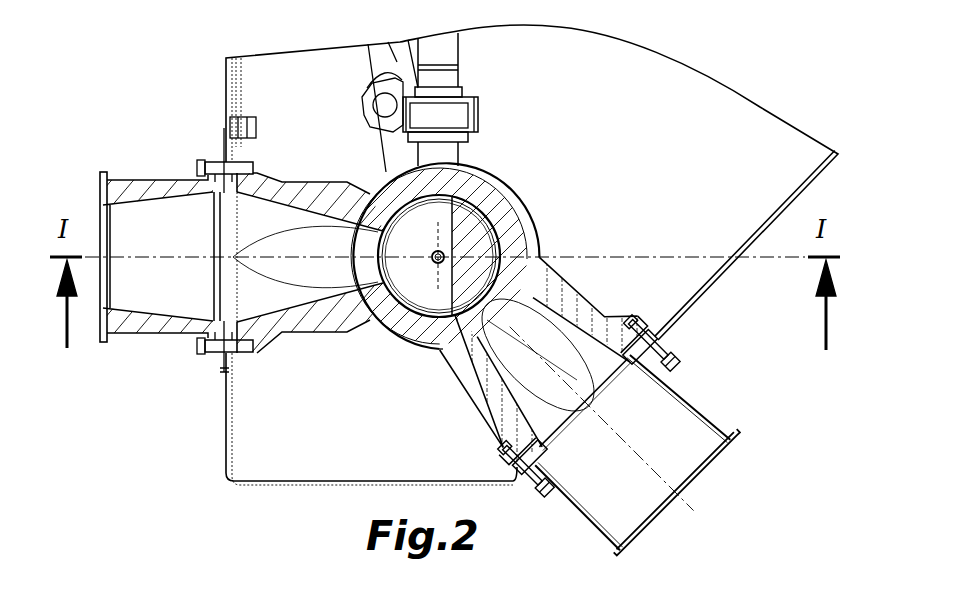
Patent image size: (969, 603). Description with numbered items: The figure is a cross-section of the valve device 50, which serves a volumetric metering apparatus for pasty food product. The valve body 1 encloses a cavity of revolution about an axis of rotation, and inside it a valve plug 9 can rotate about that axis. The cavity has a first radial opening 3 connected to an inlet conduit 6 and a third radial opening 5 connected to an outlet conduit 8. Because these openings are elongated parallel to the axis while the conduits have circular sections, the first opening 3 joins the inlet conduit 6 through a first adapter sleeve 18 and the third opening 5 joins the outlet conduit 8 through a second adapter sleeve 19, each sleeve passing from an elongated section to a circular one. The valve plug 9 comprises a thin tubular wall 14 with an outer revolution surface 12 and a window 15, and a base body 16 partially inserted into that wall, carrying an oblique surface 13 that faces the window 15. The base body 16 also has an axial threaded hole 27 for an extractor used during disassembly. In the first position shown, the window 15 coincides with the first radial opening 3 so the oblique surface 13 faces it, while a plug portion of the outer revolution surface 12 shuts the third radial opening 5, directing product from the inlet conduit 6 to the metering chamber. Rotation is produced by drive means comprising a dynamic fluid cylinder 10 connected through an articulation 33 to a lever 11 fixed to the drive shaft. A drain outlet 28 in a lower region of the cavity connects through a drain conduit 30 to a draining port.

The valve body 1 is at (390, 348).
The first radial opening 3 is at (320, 290).
The third radial opening 5 is at (545, 293).
The inlet conduit 6 is at (147, 185).
The outlet conduit 8 is at (587, 503).
The valve plug 9 is at (412, 222).
The dynamic fluid cylinder 10 is at (377, 60).
The lever 11 is at (383, 148).
The outer revolution surface 12 is at (460, 333).
The oblique surface 13 is at (424, 302).
The thin tubular wall 14 is at (500, 222).
The window 15 is at (350, 283).
The base body 16 is at (493, 175).
The first adapter sleeve 18 is at (290, 330).
The second adapter sleeve 19 is at (595, 312).
The axial threaded hole 27 is at (446, 253).
The drain outlet 28 is at (453, 155).
The drain conduit 30 is at (450, 45).
The articulation 33 is at (382, 108).
The valve device 50 is at (600, 155).